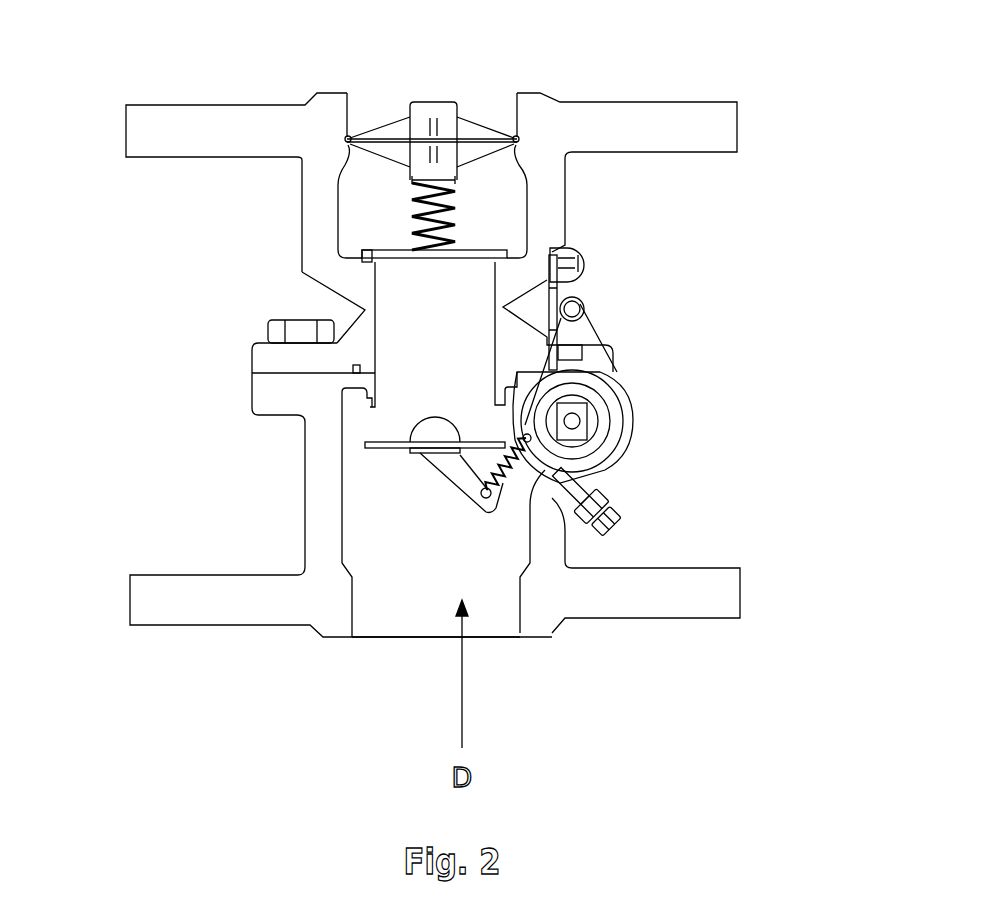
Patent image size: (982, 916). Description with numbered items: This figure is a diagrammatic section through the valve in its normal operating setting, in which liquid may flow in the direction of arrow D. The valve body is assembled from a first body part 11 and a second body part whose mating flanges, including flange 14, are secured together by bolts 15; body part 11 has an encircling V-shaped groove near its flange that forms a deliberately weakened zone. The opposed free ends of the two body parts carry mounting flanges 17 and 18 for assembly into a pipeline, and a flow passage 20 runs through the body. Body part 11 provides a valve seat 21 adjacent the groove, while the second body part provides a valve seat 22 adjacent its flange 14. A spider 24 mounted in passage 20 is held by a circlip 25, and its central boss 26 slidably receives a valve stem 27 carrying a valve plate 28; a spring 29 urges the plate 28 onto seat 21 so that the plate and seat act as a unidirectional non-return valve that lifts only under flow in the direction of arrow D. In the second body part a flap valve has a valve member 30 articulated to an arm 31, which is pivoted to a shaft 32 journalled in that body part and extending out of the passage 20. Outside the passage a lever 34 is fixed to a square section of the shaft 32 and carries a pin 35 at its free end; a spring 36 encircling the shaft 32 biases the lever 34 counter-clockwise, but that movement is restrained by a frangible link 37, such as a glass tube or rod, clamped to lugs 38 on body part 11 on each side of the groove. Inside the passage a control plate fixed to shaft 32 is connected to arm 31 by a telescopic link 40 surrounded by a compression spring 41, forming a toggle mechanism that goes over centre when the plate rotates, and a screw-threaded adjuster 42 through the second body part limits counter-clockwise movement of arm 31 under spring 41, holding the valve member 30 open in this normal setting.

The first body part 11 is at (313, 163).
The mating flange 14 is at (268, 387).
The bolts 15 is at (272, 332).
The mounting flange 17 is at (698, 123).
The mounting flange 18 is at (720, 587).
The flow passage 20 is at (372, 537).
The valve seat 21 is at (542, 247).
The valve seat 22 is at (365, 397).
The spider 24 is at (463, 130).
The circlip 25 is at (445, 185).
The central boss 26 is at (437, 112).
The valve stem 27 is at (445, 200).
The valve plate 28 is at (368, 253).
The spring 29 is at (457, 230).
The valve member 30 is at (368, 445).
The arm 31 is at (448, 450).
The shaft 32 is at (577, 423).
The lever 34 is at (575, 328).
The pin 35 is at (573, 310).
The spring 36 is at (588, 403).
The frangible link 37 is at (555, 292).
The lugs 38 is at (585, 262).
The telescopic link 40 is at (485, 493).
The compression spring 41 is at (510, 470).
The screw-threaded adjuster 42 is at (598, 497).